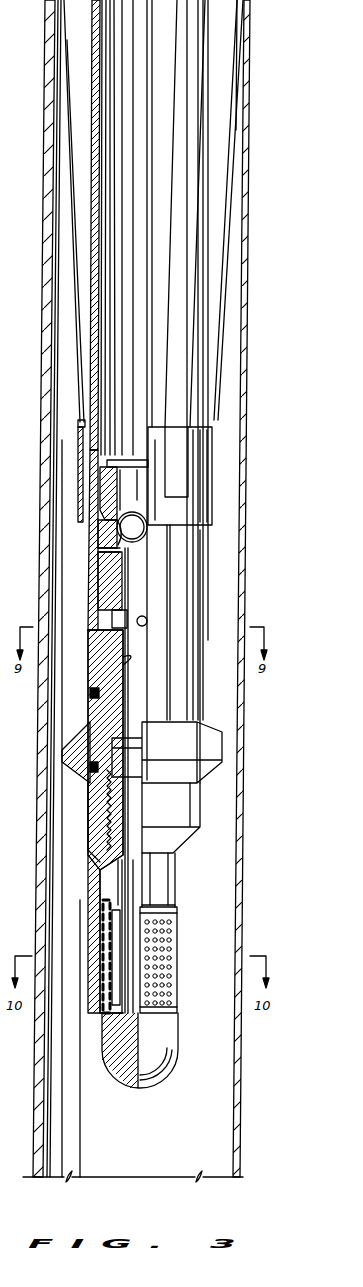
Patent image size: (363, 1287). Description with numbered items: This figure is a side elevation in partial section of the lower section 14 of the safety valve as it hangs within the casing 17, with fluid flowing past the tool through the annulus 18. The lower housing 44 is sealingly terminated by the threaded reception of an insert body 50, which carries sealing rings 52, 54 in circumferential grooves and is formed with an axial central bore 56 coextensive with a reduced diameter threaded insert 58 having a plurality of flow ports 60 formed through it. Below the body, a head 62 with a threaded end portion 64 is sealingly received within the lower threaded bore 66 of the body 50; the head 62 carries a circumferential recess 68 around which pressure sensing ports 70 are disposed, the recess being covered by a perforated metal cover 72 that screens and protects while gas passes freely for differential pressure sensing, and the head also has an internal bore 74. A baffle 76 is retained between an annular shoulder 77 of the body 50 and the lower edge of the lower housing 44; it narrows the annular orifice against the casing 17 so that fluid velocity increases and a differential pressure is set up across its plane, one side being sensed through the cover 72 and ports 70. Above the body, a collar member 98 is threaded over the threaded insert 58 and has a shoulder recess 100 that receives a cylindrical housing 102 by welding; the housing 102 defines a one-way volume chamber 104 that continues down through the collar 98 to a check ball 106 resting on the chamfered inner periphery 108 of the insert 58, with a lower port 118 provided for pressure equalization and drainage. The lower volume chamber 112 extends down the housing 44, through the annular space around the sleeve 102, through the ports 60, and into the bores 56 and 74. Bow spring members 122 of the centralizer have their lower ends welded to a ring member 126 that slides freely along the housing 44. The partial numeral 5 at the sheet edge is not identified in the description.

The lower section 14 is at (262, 73).
The casing 17 is at (247, 138).
The annulus 18 is at (215, 870).
The lower housing 44 is at (92, 42).
The insert body 50 is at (95, 740).
The sealing ring 52 is at (110, 705).
The sealing ring 54 is at (85, 768).
The axial central bore 56 is at (128, 660).
The threaded insert 58 is at (110, 572).
The flow ports 60 is at (112, 620).
The head 62 is at (113, 883).
The threaded end portion 64 is at (85, 857).
The lower threaded bore 66 is at (90, 808).
The circumferential recess 68 is at (113, 940).
The pressure sensing ports 70 is at (118, 955).
The perforated metal cover 72 is at (163, 985).
The internal bore 74 is at (108, 903).
The baffle 76 is at (75, 748).
The annular shoulder 77 is at (90, 790).
The collar member 98 is at (112, 546).
The shoulder recess 100 is at (112, 488).
The cylindrical housing 102 is at (100, 432).
The one-way volume chamber 104 is at (130, 232).
The check ball 106 is at (137, 518).
The chamfered inner periphery 108 is at (110, 555).
The lower volume chamber 112 is at (100, 156).
The lower port 118 is at (118, 537).
The bow spring members 122 is at (228, 238).
The ring member 126 is at (195, 515).
The partial numeral 5 is at (2, 130).